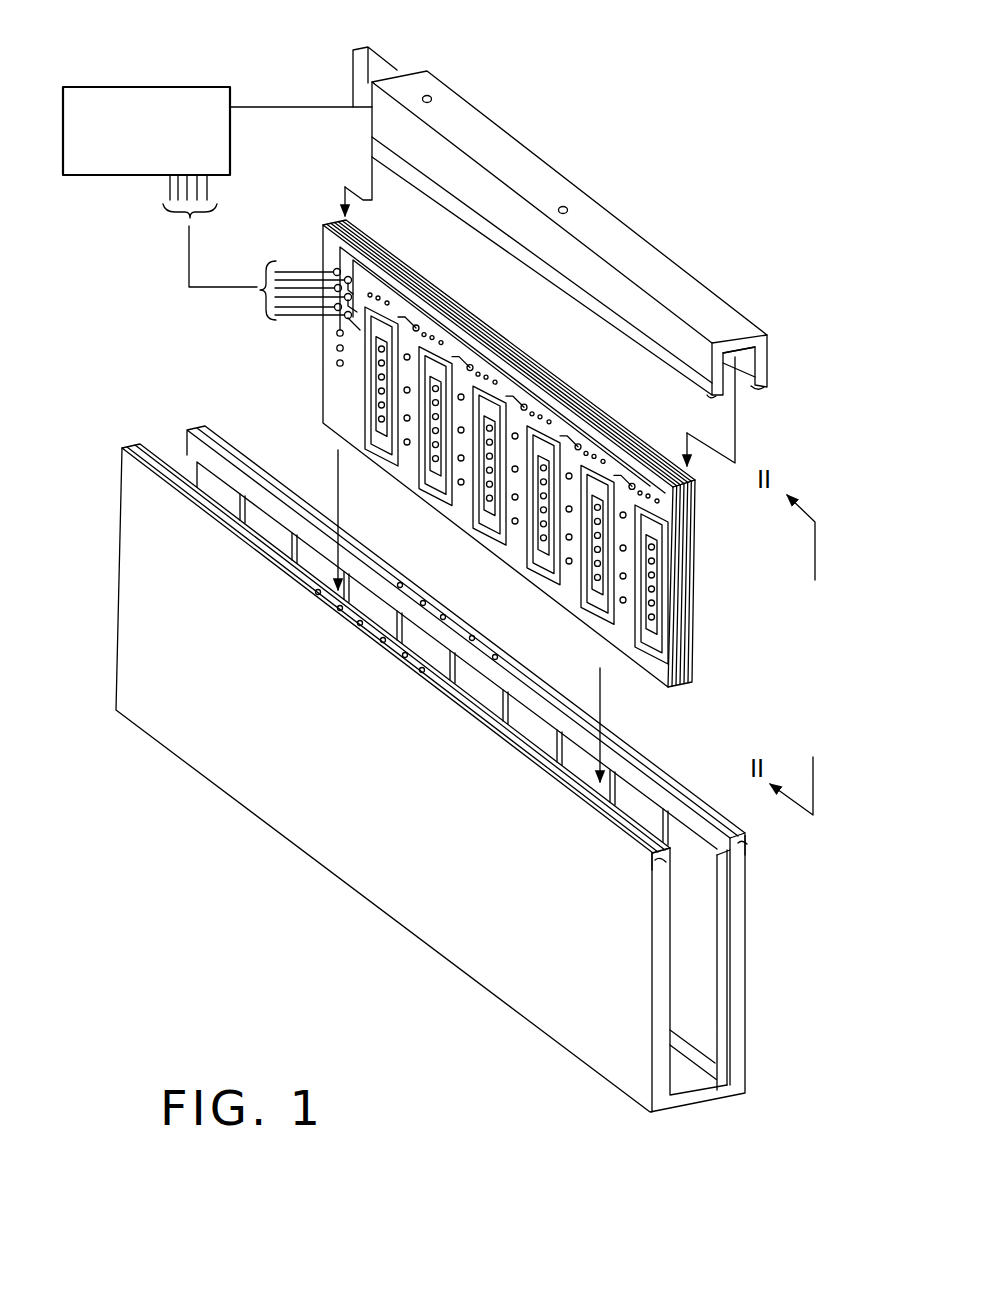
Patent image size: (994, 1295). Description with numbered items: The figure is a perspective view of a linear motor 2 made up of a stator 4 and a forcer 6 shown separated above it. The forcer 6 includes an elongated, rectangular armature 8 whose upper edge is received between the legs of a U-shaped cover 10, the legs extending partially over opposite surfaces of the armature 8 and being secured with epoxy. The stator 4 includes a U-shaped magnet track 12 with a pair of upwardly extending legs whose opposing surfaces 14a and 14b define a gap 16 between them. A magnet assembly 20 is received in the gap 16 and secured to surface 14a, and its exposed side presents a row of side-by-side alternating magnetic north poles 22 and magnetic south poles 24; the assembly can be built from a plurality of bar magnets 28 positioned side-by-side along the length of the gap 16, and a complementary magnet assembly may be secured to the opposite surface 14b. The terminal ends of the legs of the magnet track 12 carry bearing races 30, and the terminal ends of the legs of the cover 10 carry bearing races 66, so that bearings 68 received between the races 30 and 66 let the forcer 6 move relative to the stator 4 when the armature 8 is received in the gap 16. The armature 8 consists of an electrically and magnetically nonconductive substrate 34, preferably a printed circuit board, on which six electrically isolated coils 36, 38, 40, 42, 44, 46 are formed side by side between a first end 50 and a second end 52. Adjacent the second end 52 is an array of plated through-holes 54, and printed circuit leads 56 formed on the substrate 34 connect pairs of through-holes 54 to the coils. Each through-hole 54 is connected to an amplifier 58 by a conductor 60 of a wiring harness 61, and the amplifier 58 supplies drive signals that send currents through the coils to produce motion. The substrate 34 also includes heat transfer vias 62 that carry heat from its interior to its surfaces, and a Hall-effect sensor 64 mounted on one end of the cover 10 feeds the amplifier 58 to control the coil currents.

The linear motor 2 is at (146, 309).
The stator 4 is at (150, 761).
The forcer 6 is at (792, 333).
The armature 8 is at (708, 569).
The U-shaped cover 10 is at (634, 200).
The U-shaped magnet track 12 is at (425, 842).
The opposing surface 14a is at (187, 440).
The opposing surface 14b is at (143, 447).
The gap 16 is at (693, 962).
The magnet assembly 20 is at (478, 595).
The magnetic north pole 22 is at (703, 893).
The magnetic south pole 24 is at (207, 473).
The bar magnet 28 is at (612, 828).
The bearing race 30 is at (660, 860).
The substrate 34 is at (310, 393).
The coil 36 is at (367, 455).
The coil 38 is at (415, 500).
The coil 40 is at (472, 533).
The coil 42 is at (540, 628).
The coil 44 is at (607, 630).
The coil 46 is at (660, 515).
The first end 50 is at (683, 647).
The second end 52 is at (323, 405).
The plated through-hole 54 is at (335, 323).
The printed circuit lead 56 is at (327, 250).
The amplifier 58 is at (115, 85).
The conductor 60 is at (215, 193).
The wiring harness 61 is at (188, 248).
The heat transfer via 62 is at (340, 385).
The Hall-effect sensor 64 is at (380, 62).
The bearing race 66 is at (708, 394).
The bearing 68 is at (322, 601).